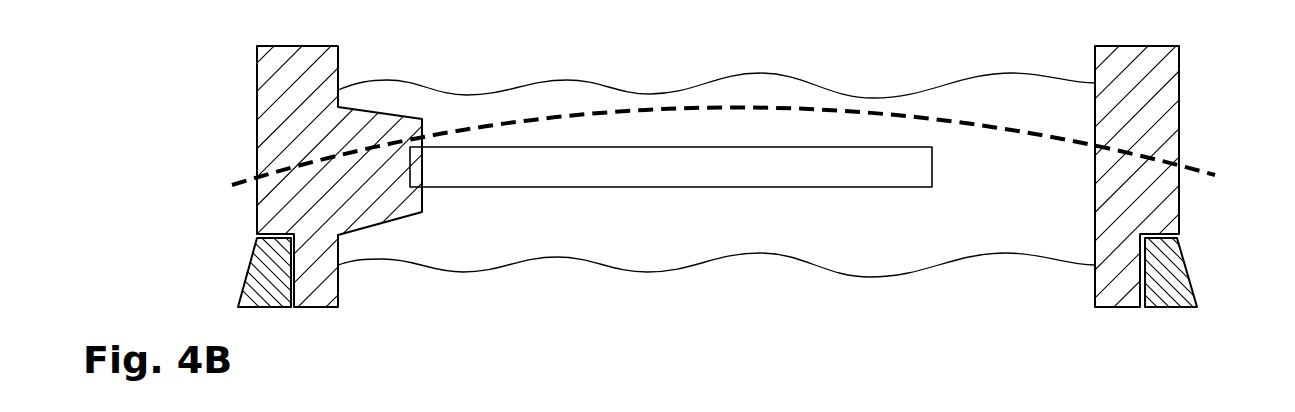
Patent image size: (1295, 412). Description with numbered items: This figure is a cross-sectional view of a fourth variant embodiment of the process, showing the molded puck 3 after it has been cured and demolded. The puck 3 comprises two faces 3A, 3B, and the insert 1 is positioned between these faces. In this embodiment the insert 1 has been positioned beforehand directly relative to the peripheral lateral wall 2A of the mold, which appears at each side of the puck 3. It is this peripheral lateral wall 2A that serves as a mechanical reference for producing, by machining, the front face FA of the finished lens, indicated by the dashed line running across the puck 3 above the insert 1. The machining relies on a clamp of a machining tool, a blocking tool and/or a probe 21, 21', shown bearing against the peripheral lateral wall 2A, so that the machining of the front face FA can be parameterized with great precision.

The insert 1 is at (694, 154).
The peripheral lateral wall of the mold 2A is at (1158, 100).
The puck 3 is at (716, 197).
The face of the puck 3A is at (420, 82).
The face of the puck 3B is at (425, 268).
The probe 21 is at (261, 272).
The probe 21' is at (1172, 272).
The front face of the finished lens FA is at (530, 120).